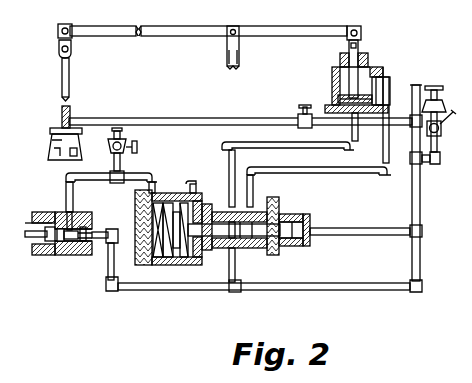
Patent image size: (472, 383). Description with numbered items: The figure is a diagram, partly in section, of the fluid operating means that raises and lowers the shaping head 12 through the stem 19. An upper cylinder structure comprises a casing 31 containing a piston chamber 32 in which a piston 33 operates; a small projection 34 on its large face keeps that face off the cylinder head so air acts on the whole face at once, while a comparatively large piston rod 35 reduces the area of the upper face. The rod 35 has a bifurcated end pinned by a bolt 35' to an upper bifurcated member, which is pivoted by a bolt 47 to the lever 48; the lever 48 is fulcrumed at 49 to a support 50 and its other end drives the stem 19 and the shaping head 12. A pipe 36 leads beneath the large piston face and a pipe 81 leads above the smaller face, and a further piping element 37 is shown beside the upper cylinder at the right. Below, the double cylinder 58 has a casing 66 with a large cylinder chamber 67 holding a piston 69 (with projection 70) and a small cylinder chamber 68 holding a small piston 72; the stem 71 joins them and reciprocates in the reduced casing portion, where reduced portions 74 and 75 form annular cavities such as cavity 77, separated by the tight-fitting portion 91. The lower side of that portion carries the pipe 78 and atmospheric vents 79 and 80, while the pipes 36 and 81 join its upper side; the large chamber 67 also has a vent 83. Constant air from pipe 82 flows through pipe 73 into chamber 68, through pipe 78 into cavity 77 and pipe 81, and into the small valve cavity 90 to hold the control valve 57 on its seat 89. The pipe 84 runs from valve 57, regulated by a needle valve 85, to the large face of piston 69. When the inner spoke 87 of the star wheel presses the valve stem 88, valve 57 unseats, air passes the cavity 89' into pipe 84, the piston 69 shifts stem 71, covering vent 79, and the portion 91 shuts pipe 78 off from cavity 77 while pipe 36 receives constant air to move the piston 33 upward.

The shaping head 12 is at (53, 143).
The stem 19 is at (70, 75).
The casing 31 is at (388, 92).
The piston chamber 32 is at (379, 72).
The piston 33 is at (338, 100).
The projection 34 is at (357, 126).
The piston rod 35 is at (366, 68).
The bolt 35' is at (339, 54).
The pipe 36 is at (283, 144).
The supply pipe 37 is at (386, 108).
The bolt 47 is at (354, 26).
The lever 48 is at (169, 33).
The fulcrum 49 is at (240, 30).
The support 50 is at (240, 52).
The control valve 57 is at (78, 254).
The double cylinder 58 is at (174, 264).
The casing 66 is at (168, 204).
The large cylinder chamber 67 is at (196, 264).
The small cylinder chamber 68 is at (305, 217).
The piston 69 is at (177, 212).
The projection 70 is at (156, 192).
The stem 71 is at (184, 203).
The small piston 72 is at (284, 222).
The pipe 73 is at (340, 232).
The reduced portion 74 is at (219, 222).
The reduced portion 75 is at (247, 224).
The annular cavity 77 is at (240, 240).
The pipe 78 is at (236, 293).
The atmospheric vent 79 is at (208, 250).
The atmospheric vent 80 is at (256, 248).
The pipe 81 is at (332, 171).
The constant air pressure pipe 82 is at (420, 205).
The atmospheric vent 83 is at (194, 184).
The pipe 84 is at (66, 197).
The needle valve 85 is at (115, 146).
The inner spoke 87 is at (34, 258).
The valve stem 88 is at (56, 258).
The valve seat 89 is at (79, 211).
The small cavity 89' is at (79, 267).
The small valve cavity 90 is at (93, 222).
The tight-fitting portion 91 is at (235, 216).